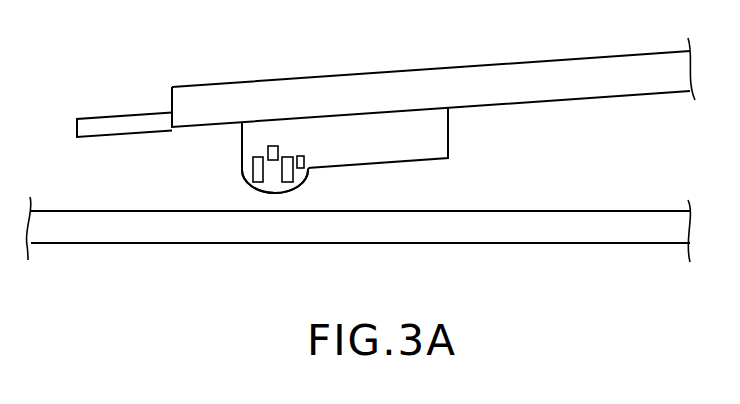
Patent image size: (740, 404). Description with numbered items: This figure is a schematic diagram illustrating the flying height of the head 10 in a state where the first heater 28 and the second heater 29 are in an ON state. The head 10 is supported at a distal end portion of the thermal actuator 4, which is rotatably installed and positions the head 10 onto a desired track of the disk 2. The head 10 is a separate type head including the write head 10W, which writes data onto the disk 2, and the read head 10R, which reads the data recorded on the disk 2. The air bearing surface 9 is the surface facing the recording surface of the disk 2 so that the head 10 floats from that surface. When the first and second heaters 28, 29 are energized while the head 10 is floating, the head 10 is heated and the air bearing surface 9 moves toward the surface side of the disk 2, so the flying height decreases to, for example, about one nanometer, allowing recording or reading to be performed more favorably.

The disk 2 is at (607, 245).
The thermal actuator 4 is at (615, 55).
The air bearing surface 9 is at (258, 191).
The head 10 is at (385, 137).
The write head 10W is at (243, 167).
The read head 10R is at (306, 176).
The first heater 28 is at (272, 146).
The second heater 29 is at (303, 159).